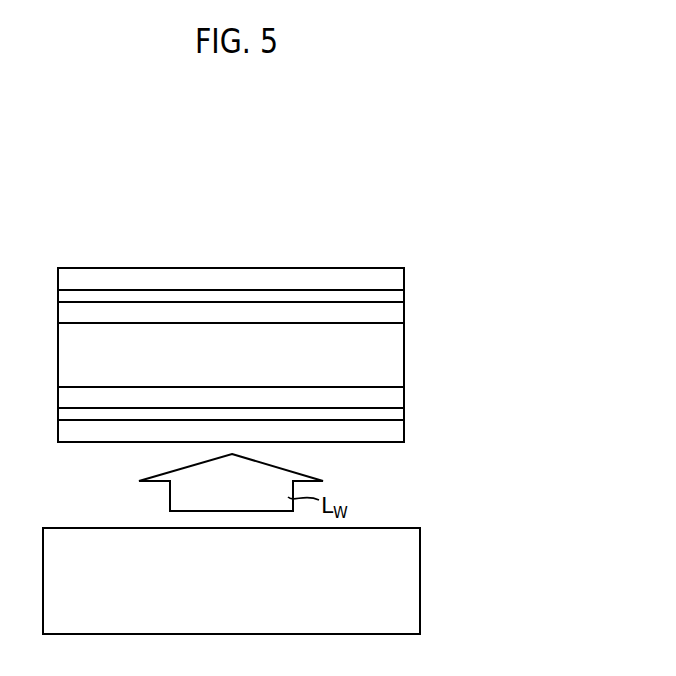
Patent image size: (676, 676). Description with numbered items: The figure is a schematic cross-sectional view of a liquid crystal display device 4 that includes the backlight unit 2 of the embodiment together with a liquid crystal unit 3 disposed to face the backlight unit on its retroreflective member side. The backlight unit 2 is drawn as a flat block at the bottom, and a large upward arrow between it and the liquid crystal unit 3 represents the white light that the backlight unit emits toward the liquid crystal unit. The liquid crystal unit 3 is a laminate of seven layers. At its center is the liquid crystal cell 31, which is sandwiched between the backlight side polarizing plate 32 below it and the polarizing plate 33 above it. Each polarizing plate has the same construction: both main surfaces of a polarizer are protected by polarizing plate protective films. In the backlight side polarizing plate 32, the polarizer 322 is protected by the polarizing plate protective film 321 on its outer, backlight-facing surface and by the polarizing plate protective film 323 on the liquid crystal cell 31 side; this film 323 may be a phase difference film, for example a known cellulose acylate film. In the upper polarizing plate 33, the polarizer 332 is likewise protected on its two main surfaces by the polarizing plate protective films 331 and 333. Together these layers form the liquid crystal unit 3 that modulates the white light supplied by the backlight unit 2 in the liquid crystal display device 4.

The backlight unit 2 is at (421, 540).
The liquid crystal unit 3 is at (558, 260).
The liquid crystal display device 4 is at (444, 221).
The liquid crystal cell 31 is at (398, 355).
The backlight side polarizing plate 32 is at (519, 362).
The polarizing plate protective film 321 is at (398, 432).
The polarizer 322 is at (398, 414).
The polarizing plate protective film 323 is at (398, 397).
The polarizing plate 33 is at (519, 241).
The polarizing plate protective film 331 is at (398, 279).
The polarizer 332 is at (398, 296).
The polarizing plate protective film 333 is at (398, 312).